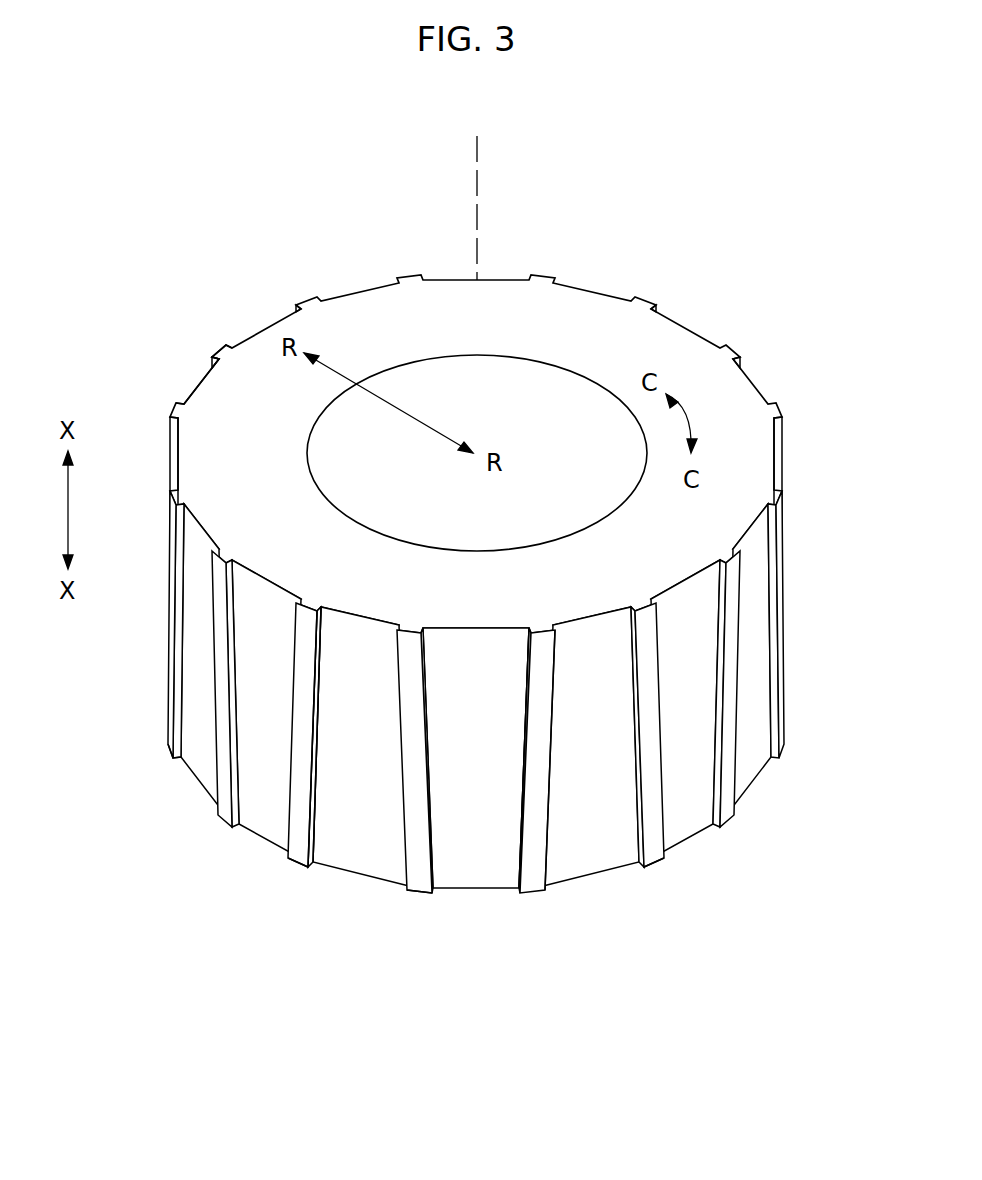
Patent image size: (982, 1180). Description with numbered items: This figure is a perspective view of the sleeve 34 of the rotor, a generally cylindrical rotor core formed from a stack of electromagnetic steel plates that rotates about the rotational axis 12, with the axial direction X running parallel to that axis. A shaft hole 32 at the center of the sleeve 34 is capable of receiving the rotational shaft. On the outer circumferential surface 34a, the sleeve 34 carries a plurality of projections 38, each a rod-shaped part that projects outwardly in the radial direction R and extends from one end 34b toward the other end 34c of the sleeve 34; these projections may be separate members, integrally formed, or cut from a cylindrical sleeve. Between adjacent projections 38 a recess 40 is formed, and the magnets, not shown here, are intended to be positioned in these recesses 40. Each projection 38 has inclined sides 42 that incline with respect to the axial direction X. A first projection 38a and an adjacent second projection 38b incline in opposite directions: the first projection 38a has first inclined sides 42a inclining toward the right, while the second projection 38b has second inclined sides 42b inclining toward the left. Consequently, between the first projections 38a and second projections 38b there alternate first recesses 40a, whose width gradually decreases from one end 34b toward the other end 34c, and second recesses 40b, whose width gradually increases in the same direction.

The rotational axis 12 is at (485, 192).
The shaft hole 32 is at (627, 413).
The sleeve 34 is at (454, 606).
The outer circumferential surface 34a is at (757, 388).
The one end 34b is at (170, 376).
The other end 34c is at (128, 737).
The projections 38 is at (482, 606).
The first projection 38a is at (597, 603).
The second projection 38b is at (735, 350).
The recess 40 is at (534, 702).
The first recess 40a is at (611, 589).
The second recess 40b is at (590, 675).
The inclined sides 42 is at (432, 770).
The first inclined sides 42a is at (521, 790).
The second inclined sides 42b is at (425, 663).